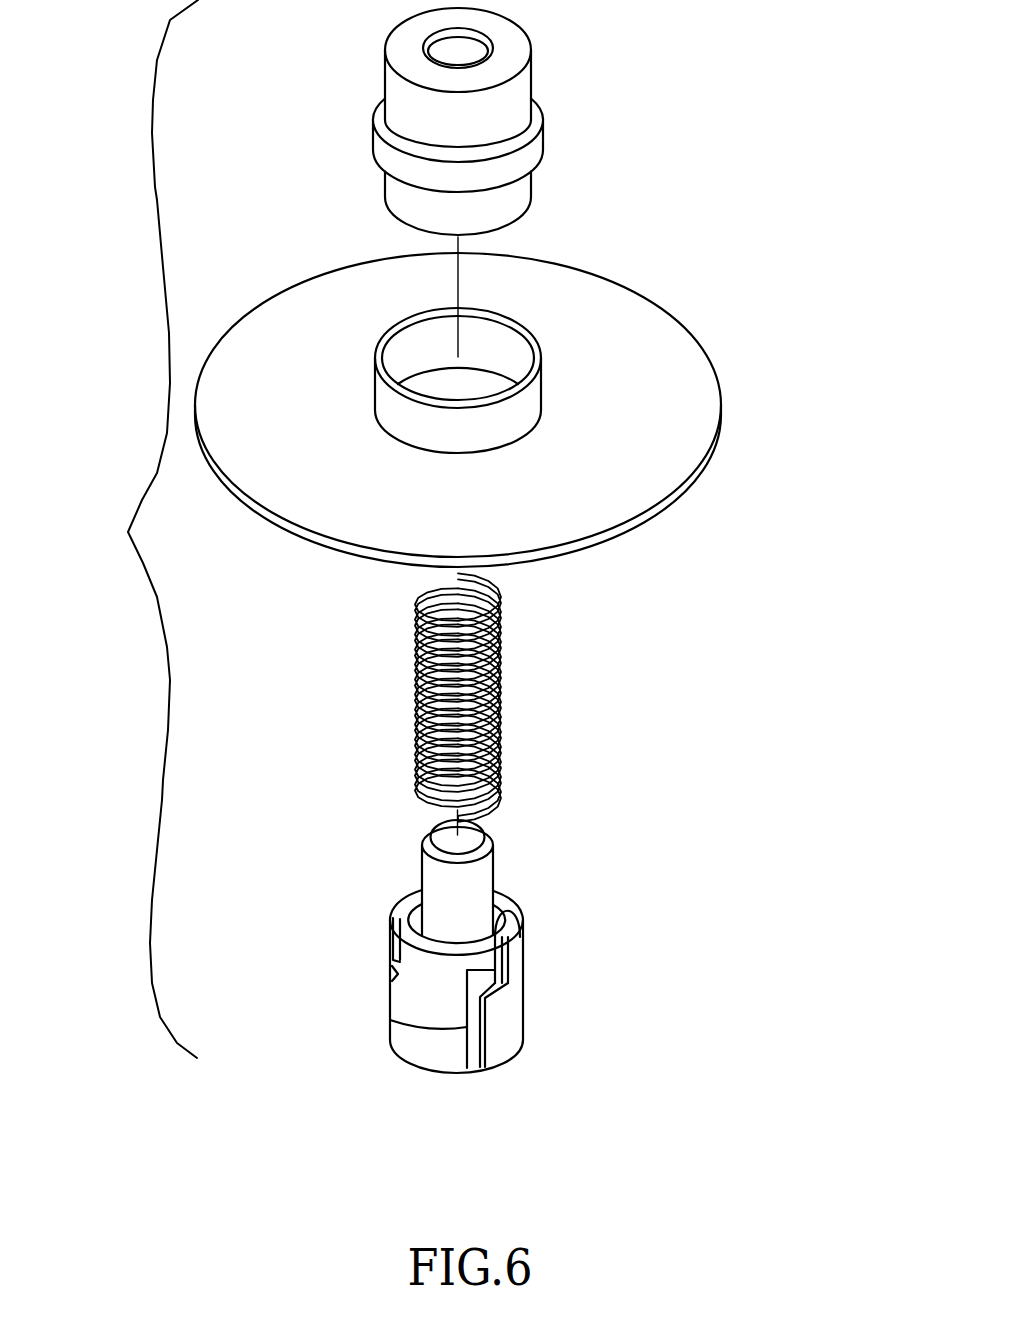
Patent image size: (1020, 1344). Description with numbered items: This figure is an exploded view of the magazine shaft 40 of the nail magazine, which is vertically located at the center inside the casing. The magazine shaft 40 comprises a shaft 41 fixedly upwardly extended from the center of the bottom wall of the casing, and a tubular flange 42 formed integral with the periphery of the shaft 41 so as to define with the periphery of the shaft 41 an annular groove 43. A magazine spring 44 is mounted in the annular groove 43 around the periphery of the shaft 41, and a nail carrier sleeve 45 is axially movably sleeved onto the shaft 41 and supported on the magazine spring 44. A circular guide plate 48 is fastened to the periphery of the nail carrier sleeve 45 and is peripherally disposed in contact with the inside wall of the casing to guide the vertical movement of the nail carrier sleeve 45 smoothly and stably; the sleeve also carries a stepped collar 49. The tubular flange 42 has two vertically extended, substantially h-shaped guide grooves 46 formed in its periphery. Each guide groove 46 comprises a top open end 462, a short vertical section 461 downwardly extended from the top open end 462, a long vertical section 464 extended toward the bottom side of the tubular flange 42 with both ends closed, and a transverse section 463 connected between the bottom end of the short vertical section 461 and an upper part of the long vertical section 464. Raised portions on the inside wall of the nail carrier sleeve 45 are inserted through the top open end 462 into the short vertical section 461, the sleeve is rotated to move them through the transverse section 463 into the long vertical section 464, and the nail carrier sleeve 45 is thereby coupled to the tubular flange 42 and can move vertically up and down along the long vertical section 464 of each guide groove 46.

The magazine shaft 40 is at (139, 529).
The shaft 41 is at (432, 875).
The tubular flange 42 is at (515, 1005).
The annular groove 43 is at (495, 898).
The magazine spring 44 is at (505, 677).
The nail carrier sleeve 45 is at (527, 80).
The guide groove 46 is at (552, 937).
The circular guide plate 48 is at (658, 322).
The flange 49 is at (530, 125).
The short vertical section 461 is at (500, 968).
The top open end 462 is at (512, 916).
The transverse section 463 is at (493, 995).
The long vertical section 464 is at (390, 1021).